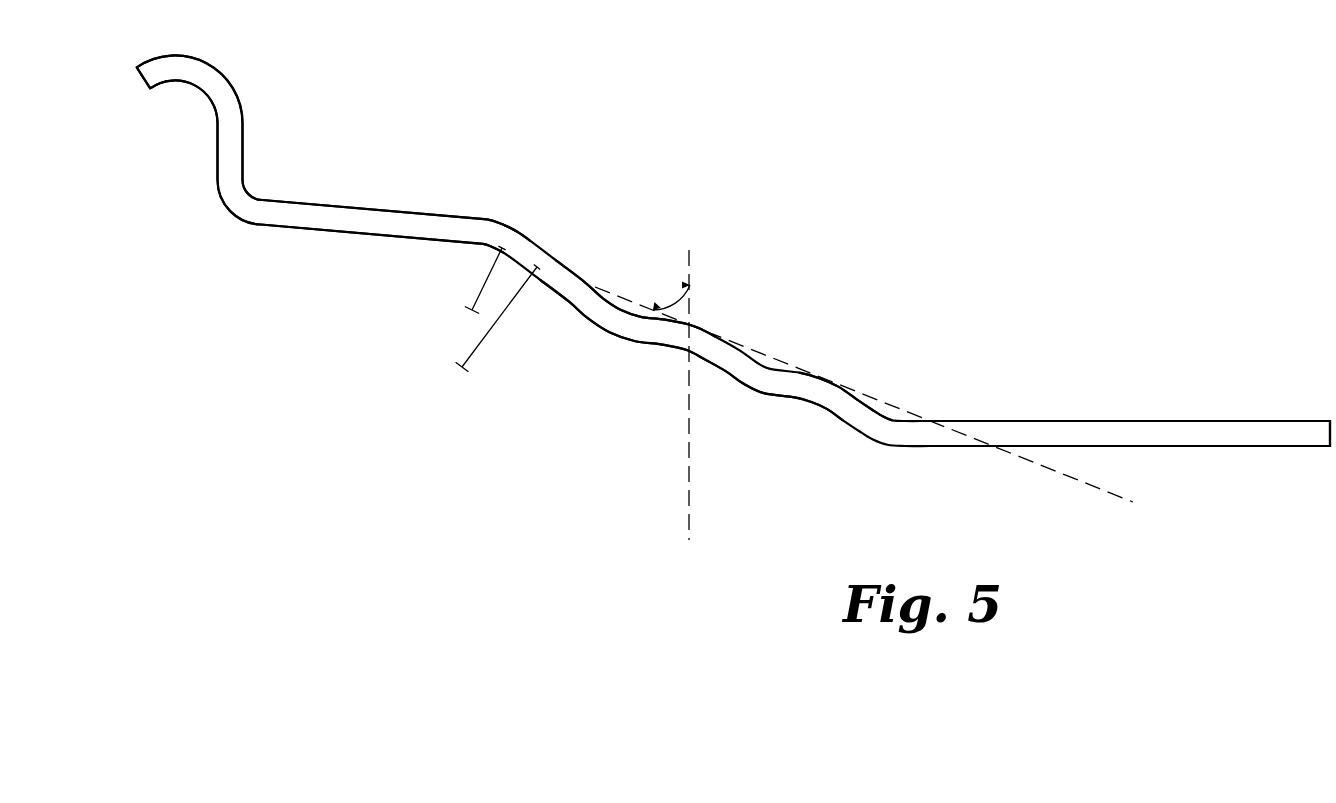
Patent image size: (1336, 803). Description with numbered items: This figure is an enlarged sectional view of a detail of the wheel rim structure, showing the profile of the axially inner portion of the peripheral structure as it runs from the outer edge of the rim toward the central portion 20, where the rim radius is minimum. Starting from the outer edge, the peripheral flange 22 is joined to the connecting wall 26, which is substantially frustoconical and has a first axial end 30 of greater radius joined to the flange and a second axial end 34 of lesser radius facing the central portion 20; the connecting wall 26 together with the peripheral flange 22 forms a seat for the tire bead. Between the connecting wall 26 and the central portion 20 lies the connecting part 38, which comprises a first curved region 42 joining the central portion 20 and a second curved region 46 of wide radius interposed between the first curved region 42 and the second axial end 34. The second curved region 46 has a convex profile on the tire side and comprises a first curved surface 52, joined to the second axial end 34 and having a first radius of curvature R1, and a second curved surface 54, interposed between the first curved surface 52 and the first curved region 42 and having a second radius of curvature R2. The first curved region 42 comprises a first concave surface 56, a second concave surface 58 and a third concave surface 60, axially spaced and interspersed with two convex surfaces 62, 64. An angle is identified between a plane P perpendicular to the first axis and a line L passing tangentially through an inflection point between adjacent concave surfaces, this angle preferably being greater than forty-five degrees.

The central portion 20 is at (1187, 420).
The peripheral flange 22 is at (140, 72).
The connecting wall 26 is at (327, 207).
The first axial end 30 is at (262, 213).
The second axial end 34 is at (498, 223).
The connecting part 38 is at (621, 403).
The first curved region 42 is at (818, 411).
The second curved region 46 is at (568, 303).
The first curved surface 52 is at (513, 227).
The second curved surface 54 is at (577, 270).
The first concave surface 56 is at (620, 310).
The second concave surface 58 is at (743, 365).
The third concave surface 60 is at (873, 415).
The convex surface 62 is at (690, 325).
The convex surface 64 is at (817, 377).
The first radius of curvature R1 is at (483, 287).
The second radius of curvature R2 is at (497, 317).
The plane P is at (698, 406).
The line L is at (870, 409).